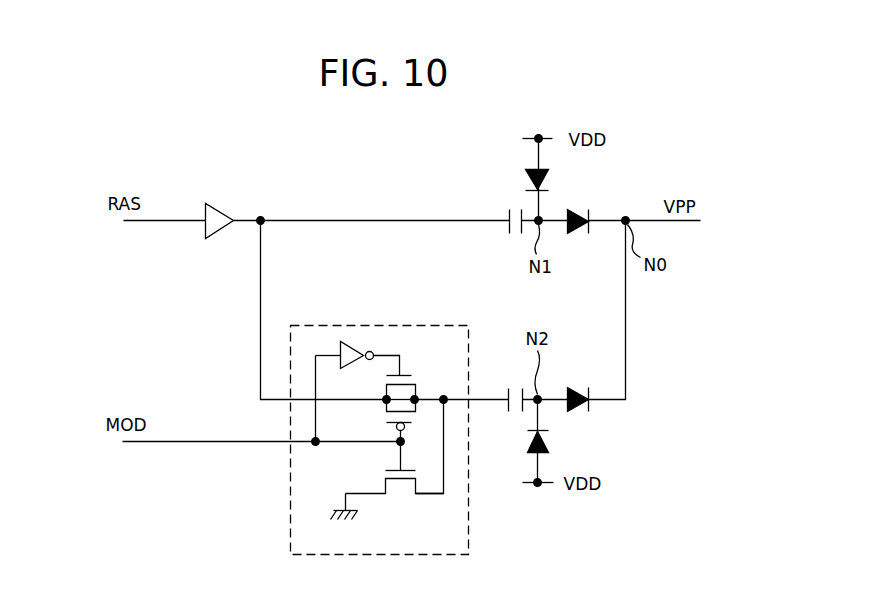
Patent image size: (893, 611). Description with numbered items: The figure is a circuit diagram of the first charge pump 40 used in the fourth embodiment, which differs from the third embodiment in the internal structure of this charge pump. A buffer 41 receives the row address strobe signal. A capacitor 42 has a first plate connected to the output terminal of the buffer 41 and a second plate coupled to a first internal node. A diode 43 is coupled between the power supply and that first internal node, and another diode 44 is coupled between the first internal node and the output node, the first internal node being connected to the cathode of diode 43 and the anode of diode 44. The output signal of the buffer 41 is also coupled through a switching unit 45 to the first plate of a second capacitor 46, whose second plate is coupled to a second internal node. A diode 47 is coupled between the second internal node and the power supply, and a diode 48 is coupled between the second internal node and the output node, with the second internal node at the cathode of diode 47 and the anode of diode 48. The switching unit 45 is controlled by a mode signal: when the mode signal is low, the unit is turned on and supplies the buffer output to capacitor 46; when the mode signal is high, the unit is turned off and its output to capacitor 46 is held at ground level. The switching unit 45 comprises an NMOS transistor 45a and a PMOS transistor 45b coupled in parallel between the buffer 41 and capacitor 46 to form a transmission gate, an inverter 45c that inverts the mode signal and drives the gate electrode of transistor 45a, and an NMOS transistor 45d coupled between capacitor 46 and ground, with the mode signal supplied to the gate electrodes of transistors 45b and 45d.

The boosted voltage generating circuit 40 is at (628, 541).
The buffer 41 is at (216, 203).
The capacitor 42 is at (507, 214).
The diode 43 is at (548, 170).
The diode 44 is at (578, 232).
The switching unit 45 is at (290, 497).
The NMOS transistor 45a is at (416, 386).
The PMOS transistor 45b is at (385, 404).
The inverter 45c is at (353, 340).
The NMOS transistor 45d is at (385, 478).
The second capacitor 46 is at (508, 385).
The diode 47 is at (548, 438).
The diode 48 is at (574, 385).